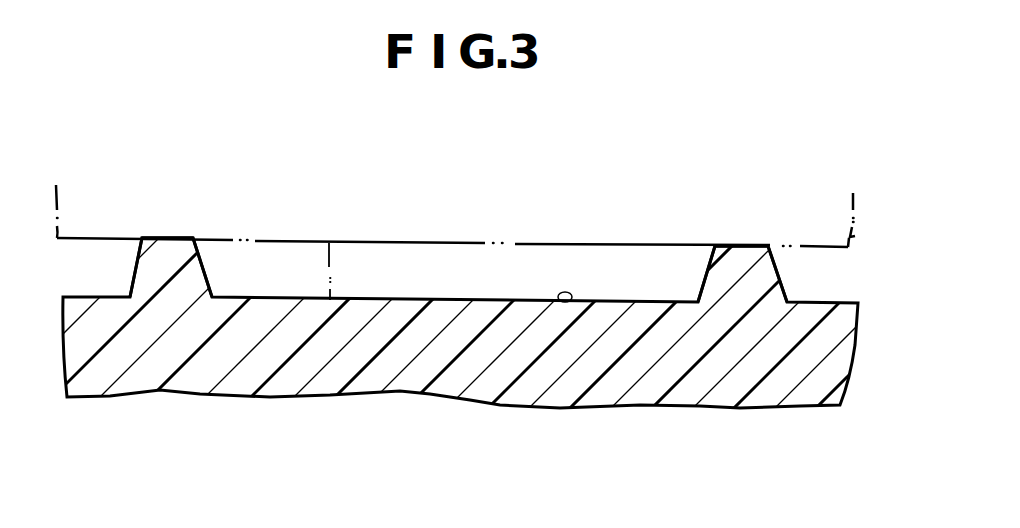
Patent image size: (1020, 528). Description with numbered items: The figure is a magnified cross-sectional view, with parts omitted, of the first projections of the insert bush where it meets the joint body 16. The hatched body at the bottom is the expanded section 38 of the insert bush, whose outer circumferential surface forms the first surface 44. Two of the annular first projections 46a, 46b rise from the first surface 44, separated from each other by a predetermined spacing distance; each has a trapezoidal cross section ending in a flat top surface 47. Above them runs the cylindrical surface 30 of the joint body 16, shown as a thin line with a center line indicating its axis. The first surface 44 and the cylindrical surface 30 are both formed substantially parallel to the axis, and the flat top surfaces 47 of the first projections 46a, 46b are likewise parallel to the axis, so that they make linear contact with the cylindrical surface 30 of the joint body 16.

The joint body 16 is at (855, 236).
The cylindrical surface 30 is at (330, 300).
The expanded section 38 is at (433, 355).
The first surface 44 is at (567, 302).
The first projection 46a is at (165, 252).
The first projection 46b is at (737, 267).
The flat top surface 47 is at (187, 238).